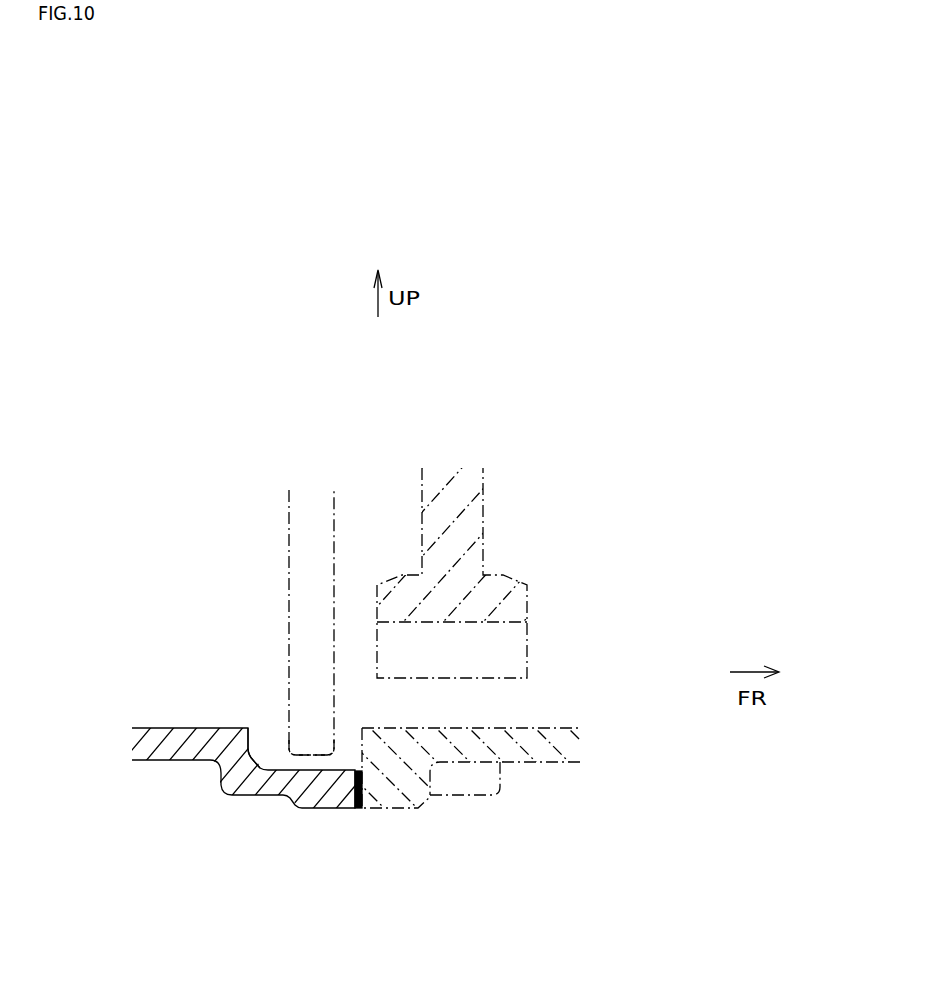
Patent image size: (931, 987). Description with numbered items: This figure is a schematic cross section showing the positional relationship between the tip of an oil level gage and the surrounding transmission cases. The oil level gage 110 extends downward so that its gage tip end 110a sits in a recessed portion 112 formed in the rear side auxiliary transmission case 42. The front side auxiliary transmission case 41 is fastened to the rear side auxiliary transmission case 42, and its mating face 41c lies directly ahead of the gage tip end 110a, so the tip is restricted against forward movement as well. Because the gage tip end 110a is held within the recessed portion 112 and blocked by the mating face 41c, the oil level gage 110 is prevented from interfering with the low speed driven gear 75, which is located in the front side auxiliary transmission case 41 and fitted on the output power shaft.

The oil level gage 110 is at (262, 576).
The gage tip end 110a is at (287, 713).
The recessed portion 112 is at (270, 745).
The low speed driven gear 75 is at (515, 573).
The front side auxiliary transmission case 41 is at (543, 762).
The mating face 41c is at (357, 771).
The rear side auxiliary transmission case 42 is at (250, 793).